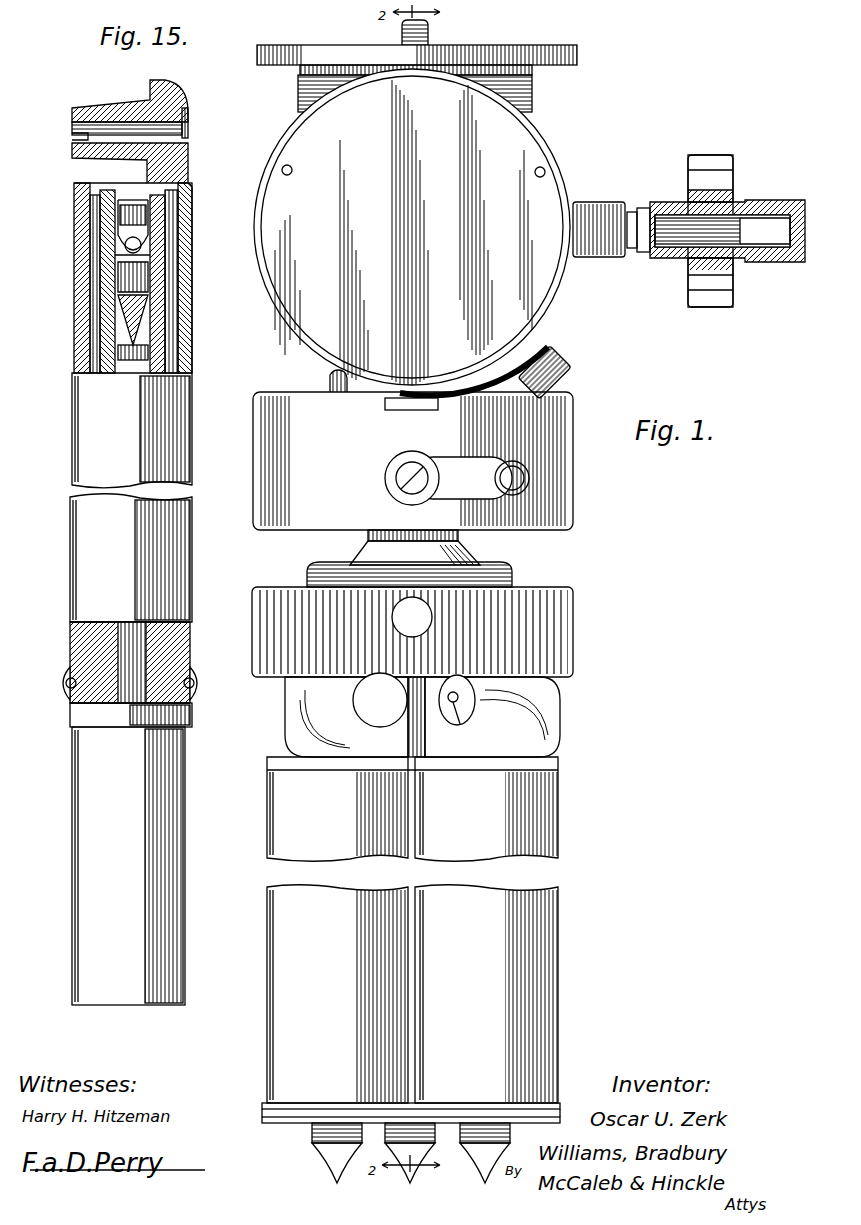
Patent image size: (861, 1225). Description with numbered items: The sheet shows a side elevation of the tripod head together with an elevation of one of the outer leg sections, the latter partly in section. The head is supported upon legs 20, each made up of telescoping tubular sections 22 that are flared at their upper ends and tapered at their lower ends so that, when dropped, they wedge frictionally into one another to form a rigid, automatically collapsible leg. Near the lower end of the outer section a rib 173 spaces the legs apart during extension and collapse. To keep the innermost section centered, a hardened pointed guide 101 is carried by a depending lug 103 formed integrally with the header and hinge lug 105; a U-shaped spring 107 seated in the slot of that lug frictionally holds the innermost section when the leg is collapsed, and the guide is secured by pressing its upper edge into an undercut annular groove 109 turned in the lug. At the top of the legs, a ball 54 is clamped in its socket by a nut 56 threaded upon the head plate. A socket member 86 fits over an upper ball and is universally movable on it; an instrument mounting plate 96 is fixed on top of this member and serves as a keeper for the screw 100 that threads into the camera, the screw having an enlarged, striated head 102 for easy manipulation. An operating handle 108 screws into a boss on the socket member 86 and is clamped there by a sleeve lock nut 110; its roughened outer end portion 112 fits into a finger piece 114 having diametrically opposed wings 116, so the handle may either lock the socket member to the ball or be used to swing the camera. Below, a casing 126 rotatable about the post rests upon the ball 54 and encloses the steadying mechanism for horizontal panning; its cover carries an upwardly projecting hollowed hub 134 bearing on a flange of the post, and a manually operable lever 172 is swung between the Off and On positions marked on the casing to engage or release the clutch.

In FIG. 15, the legs 20 is at (172, 893).
In FIG. 1, the legs 20 is at (285, 808).
In FIG. 15, the telescoping tubular sections 22 is at (170, 655).
In FIG. 1, the ball 54 is at (472, 558).
In FIG. 1, the nut 56 is at (553, 648).
In FIG. 1, the socket member 86 is at (520, 98).
In FIG. 1, the instrument mounting plate 96 is at (535, 50).
In FIG. 1, the screw 100 is at (425, 40).
In FIG. 1, the enlarged head 102 is at (472, 68).
In FIG. 15, the pointed guide 101 is at (130, 314).
In FIG. 15, the depending lug 103 is at (140, 226).
In FIG. 15, the header and hinge lug 105 is at (170, 180).
In FIG. 15, the U-shaped spring 107 is at (100, 240).
In FIG. 1, the operating handle 108 is at (637, 212).
In FIG. 15, the undercut annular groove 109 is at (125, 264).
In FIG. 1, the sleeve lock nut 110 is at (595, 212).
In FIG. 1, the outer end portion 112 is at (737, 210).
In FIG. 1, the finger piece 114 is at (705, 202).
In FIG. 1, the wings 116 is at (712, 160).
In FIG. 1, the casing 126 is at (372, 533).
In FIG. 1, the hollowed hub 134 is at (412, 449).
In FIG. 1, the lever 172 is at (500, 463).
In FIG. 15, the rib 173 is at (65, 689).